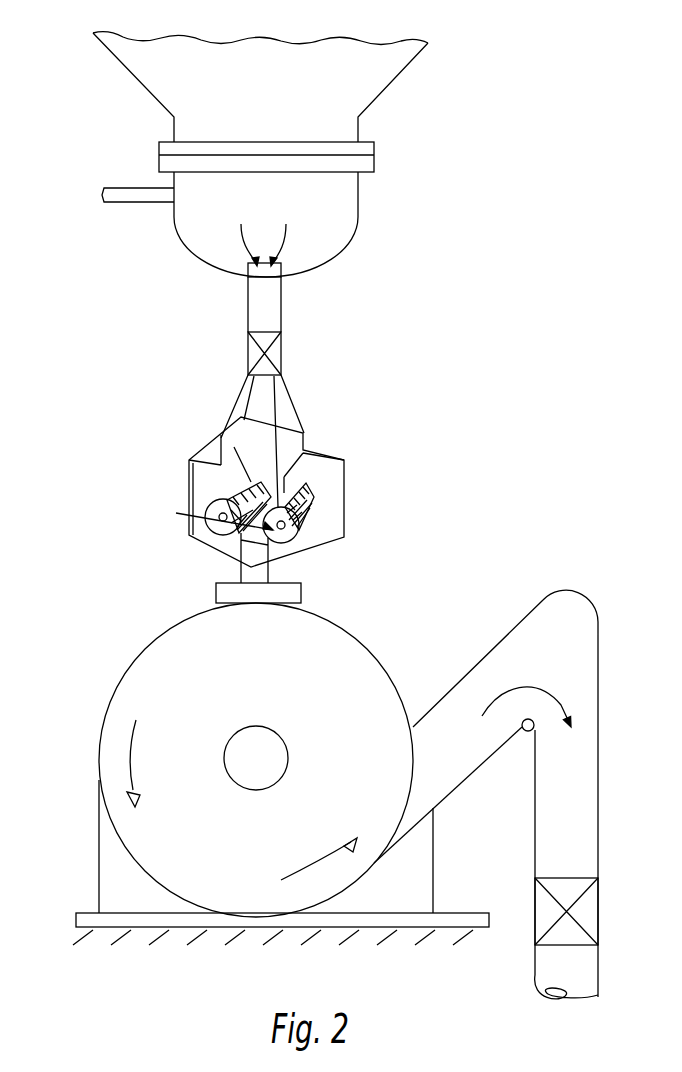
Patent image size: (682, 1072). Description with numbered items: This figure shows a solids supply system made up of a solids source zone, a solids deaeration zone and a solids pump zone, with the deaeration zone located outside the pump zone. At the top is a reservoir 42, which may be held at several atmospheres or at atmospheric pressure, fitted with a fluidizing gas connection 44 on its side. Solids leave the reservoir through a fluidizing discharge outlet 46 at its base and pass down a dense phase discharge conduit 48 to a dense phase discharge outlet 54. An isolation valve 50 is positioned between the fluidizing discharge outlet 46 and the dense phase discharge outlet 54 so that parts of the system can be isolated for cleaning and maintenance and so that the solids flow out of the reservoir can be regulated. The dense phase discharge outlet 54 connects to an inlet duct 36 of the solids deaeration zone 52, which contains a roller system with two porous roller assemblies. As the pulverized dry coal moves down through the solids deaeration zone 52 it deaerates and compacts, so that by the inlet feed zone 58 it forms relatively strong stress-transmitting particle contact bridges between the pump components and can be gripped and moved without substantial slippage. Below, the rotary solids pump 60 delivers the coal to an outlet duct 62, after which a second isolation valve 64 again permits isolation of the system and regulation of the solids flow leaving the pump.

The inlet duct 36 is at (317, 438).
The reservoir 42 is at (381, 53).
The fluidizing gas connection 44 is at (94, 194).
The fluidizing discharge outlet 46 is at (260, 283).
The dense phase discharge conduit 48 is at (270, 312).
The isolation valve 50 is at (258, 357).
The solids deaeration zone 52 is at (327, 505).
The dense phase discharge outlet 54 is at (293, 403).
The inlet feed zone 58 is at (230, 590).
The rotary solids pump 60 is at (115, 733).
The outlet duct 62 is at (462, 692).
The isolation valve 64 is at (540, 917).